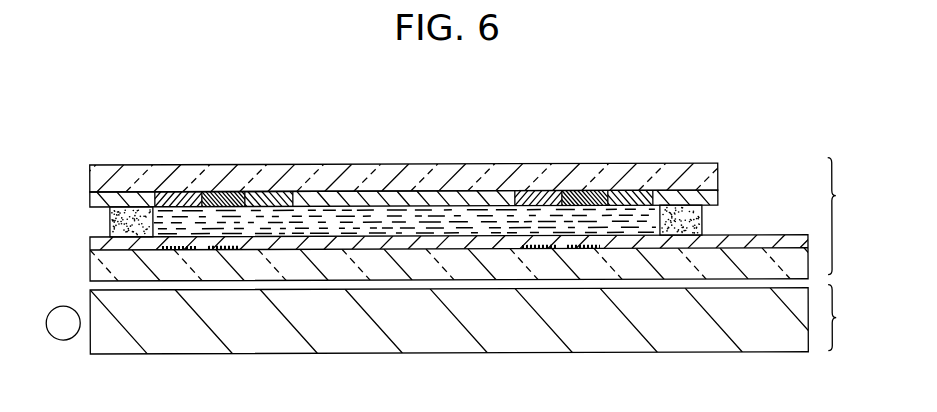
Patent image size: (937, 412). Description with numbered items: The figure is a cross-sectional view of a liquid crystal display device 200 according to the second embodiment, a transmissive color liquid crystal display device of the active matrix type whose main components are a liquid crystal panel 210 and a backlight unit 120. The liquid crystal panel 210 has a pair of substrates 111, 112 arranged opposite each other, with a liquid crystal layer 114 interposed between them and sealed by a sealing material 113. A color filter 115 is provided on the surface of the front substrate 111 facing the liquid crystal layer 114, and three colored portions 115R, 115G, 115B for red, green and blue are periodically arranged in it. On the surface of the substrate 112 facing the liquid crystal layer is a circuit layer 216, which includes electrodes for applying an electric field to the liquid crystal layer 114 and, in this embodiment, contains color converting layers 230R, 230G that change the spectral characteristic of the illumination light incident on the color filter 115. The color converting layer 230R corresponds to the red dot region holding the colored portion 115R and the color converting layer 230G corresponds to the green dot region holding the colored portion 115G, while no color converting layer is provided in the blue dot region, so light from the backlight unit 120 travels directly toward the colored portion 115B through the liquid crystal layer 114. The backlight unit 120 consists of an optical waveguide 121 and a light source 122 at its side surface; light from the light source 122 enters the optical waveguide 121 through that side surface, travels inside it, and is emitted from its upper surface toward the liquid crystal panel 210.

The liquid crystal display device 200 is at (842, 148).
The liquid crystal panel 210 is at (855, 216).
The backlight unit 120 is at (855, 318).
The substrate 111 is at (90, 182).
The substrate 112 is at (448, 236).
The sealing material 113 is at (110, 223).
The liquid crystal layer 114 is at (477, 220).
The color filter 115 is at (718, 198).
The colored portion 115R is at (182, 192).
The colored portion 115G is at (240, 192).
The colored portion 115B is at (267, 192).
The circuit layer 216 is at (770, 243).
The color converting layer 230R is at (165, 250).
The color converting layer 230G is at (213, 250).
The optical waveguide 121 is at (130, 341).
The light source 122 is at (63, 340).